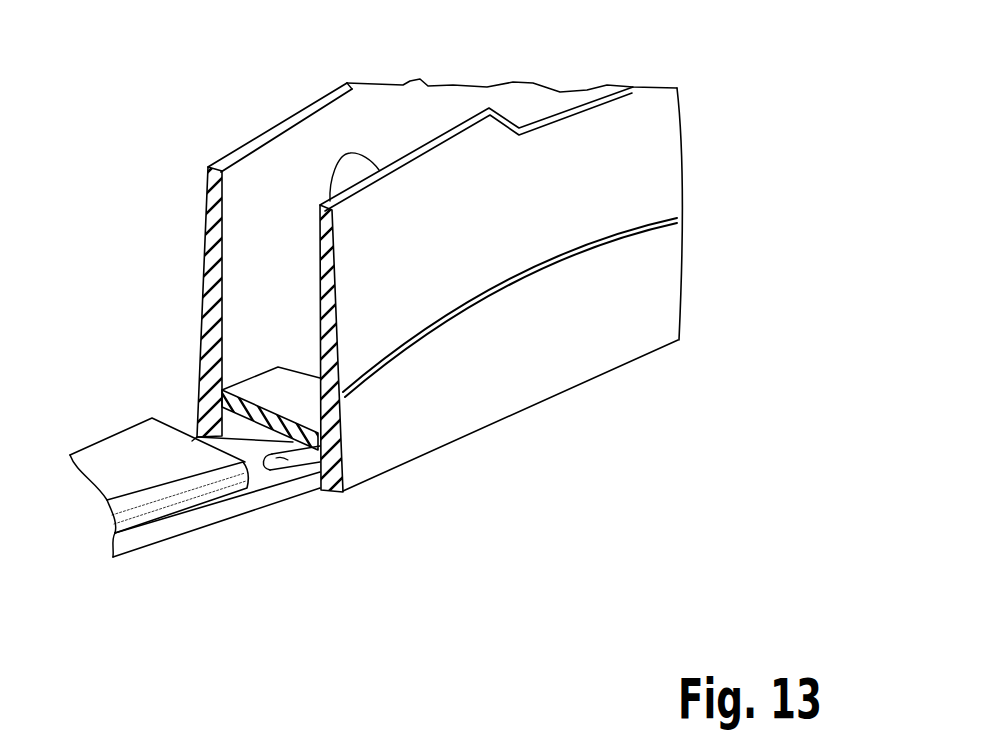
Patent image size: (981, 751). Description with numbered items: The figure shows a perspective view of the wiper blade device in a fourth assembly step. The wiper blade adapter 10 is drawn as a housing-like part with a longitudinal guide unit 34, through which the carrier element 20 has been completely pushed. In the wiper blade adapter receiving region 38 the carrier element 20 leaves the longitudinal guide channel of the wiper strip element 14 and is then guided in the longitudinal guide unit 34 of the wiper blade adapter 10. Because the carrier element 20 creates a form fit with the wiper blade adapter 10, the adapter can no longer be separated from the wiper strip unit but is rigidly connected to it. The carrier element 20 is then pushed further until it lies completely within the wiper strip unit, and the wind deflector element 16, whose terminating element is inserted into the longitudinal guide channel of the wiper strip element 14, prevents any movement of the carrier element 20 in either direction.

The wiper blade adapter 10 is at (345, 287).
The wiper strip element 14 is at (151, 535).
The wind deflector element 16 is at (92, 452).
The carrier element 20 is at (290, 472).
The longitudinal guide unit 34 is at (172, 368).
The wiper blade adapter receiving region 38 is at (138, 367).